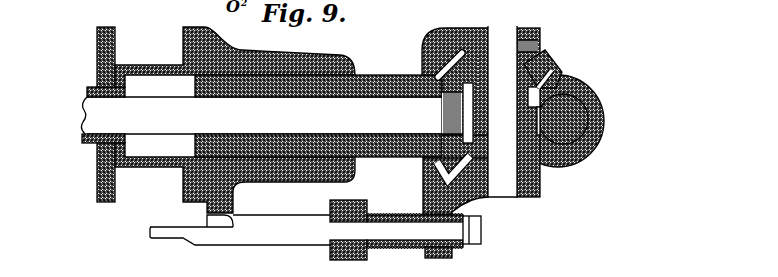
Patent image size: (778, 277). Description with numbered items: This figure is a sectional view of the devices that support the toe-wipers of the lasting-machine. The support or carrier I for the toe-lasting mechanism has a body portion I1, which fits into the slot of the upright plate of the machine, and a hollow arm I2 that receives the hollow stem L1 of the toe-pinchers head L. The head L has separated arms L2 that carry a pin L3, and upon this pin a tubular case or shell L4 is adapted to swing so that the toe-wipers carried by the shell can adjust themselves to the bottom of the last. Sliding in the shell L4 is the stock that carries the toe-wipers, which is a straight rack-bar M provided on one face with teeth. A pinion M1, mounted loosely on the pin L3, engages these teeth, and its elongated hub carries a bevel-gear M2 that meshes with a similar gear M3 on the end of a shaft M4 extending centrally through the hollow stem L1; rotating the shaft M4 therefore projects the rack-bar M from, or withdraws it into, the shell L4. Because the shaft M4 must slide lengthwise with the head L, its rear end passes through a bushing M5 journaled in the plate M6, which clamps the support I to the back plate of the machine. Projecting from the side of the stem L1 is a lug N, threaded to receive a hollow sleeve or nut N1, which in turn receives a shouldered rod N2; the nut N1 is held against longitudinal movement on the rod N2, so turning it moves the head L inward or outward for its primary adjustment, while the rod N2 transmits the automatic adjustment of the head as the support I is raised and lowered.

The shaft M4 is at (79, 113).
The bushing M5 is at (87, 90).
The plate M6 is at (84, 114).
The support or carrier I is at (235, 178).
The body portion I1 is at (235, 57).
The hollow arm I2 is at (348, 59).
The toe-pinchers head L is at (438, 121).
The hollow stem L1 is at (193, 146).
The separated arms L2 is at (541, 194).
The pin L3 is at (502, 100).
The tubular case or shell L4 is at (570, 121).
The rack-bar M is at (600, 141).
The pinion M1 is at (525, 122).
The bevel-gear M2 is at (552, 70).
The gear M3 is at (438, 156).
The lug N is at (452, 265).
The hollow sleeve or nut N1 is at (405, 236).
The shouldered rod N2 is at (240, 230).